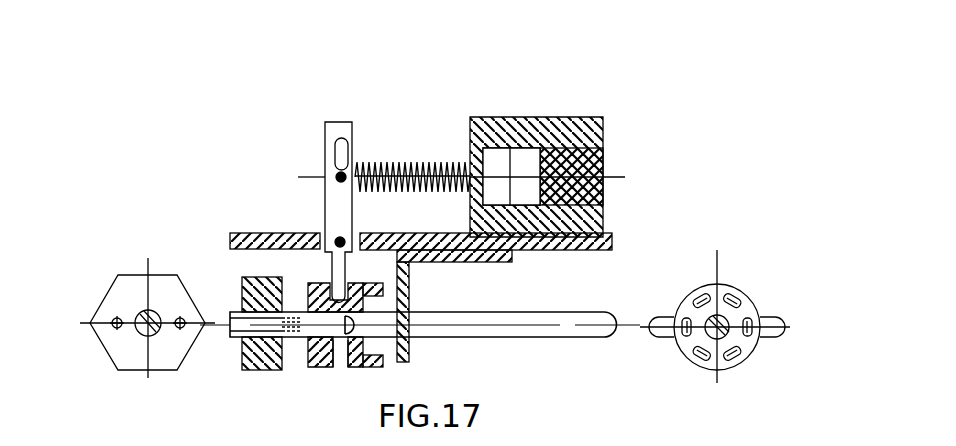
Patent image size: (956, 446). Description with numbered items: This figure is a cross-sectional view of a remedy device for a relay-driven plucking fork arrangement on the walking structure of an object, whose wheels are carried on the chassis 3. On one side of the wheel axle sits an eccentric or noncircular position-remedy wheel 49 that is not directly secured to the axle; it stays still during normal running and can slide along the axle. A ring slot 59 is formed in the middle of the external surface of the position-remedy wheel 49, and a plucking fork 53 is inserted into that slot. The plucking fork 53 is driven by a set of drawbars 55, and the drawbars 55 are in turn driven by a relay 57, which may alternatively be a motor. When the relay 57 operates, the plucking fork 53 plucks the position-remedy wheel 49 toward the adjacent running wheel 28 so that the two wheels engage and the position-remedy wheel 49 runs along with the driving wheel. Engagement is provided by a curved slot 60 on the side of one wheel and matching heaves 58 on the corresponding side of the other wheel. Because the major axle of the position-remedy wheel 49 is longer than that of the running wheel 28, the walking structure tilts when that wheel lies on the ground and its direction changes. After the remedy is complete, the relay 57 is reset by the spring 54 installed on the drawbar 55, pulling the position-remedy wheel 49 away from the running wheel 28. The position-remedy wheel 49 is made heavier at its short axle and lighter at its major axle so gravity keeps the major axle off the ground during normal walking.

The chassis 3 is at (447, 235).
The running wheel 28 is at (258, 277).
The position-remedy wheel 49 is at (310, 283).
The plucking fork 53 is at (327, 140).
The spring 54 is at (374, 165).
The drawbar 55 is at (405, 168).
The relay 57 is at (558, 190).
The heaves 58 is at (178, 328).
The ring slot 59 is at (342, 357).
The curved slot 60 is at (676, 330).